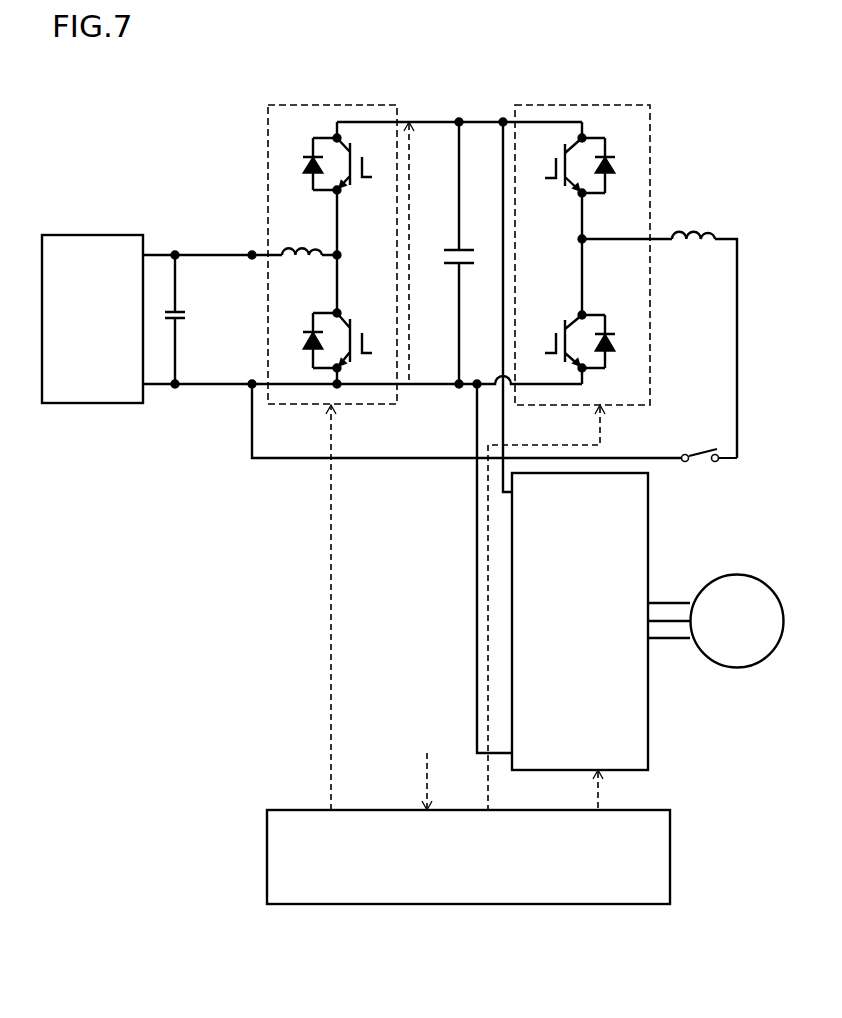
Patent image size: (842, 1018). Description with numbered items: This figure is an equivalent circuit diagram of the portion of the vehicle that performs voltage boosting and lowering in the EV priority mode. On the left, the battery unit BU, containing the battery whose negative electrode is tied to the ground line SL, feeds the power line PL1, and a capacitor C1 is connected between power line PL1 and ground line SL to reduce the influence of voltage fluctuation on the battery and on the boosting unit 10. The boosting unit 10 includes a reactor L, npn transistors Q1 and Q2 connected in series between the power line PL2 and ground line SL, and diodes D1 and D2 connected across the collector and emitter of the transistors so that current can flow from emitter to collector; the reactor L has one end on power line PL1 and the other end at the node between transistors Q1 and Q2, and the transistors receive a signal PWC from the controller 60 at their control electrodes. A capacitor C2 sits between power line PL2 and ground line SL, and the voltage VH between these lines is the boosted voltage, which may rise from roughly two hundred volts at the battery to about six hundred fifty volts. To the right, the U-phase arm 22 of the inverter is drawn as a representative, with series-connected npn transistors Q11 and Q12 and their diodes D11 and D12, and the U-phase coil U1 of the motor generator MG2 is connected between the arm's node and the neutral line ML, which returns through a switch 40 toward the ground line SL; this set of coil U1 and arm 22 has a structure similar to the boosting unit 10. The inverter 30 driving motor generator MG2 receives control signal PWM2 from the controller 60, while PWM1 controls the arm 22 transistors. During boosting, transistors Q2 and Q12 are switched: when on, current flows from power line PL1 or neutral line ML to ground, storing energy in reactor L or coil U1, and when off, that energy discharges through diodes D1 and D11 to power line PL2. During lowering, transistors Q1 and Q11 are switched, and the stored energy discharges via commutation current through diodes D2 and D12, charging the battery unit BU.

The battery unit BU is at (90, 233).
The power line PL1 is at (223, 253).
The capacitor C1 is at (178, 312).
The ground line SL is at (237, 387).
The reactor L is at (302, 238).
The boosting unit 10 is at (282, 405).
The npn transistor Q1 is at (360, 183).
The diode D1 is at (307, 173).
The npn transistor Q2 is at (357, 327).
The diode D2 is at (303, 333).
The signal PWC is at (356, 607).
The voltage VH is at (416, 466).
The power line PL2 is at (480, 122).
The capacitor C2 is at (468, 250).
The U-phase arm 22 is at (587, 105).
The npn transistor Q11 is at (555, 187).
The diode D11 is at (612, 175).
The npn transistor Q12 is at (557, 328).
The diode D12 is at (612, 334).
The U-phase coil U1 is at (698, 230).
The neutral line ML is at (723, 238).
The switch 40 is at (700, 465).
The control signal PWM1 is at (580, 607).
The inverter 30 is at (649, 731).
The motor generator MG2 is at (716, 621).
The control signal PWM2 is at (633, 790).
The controller 60 is at (300, 808).